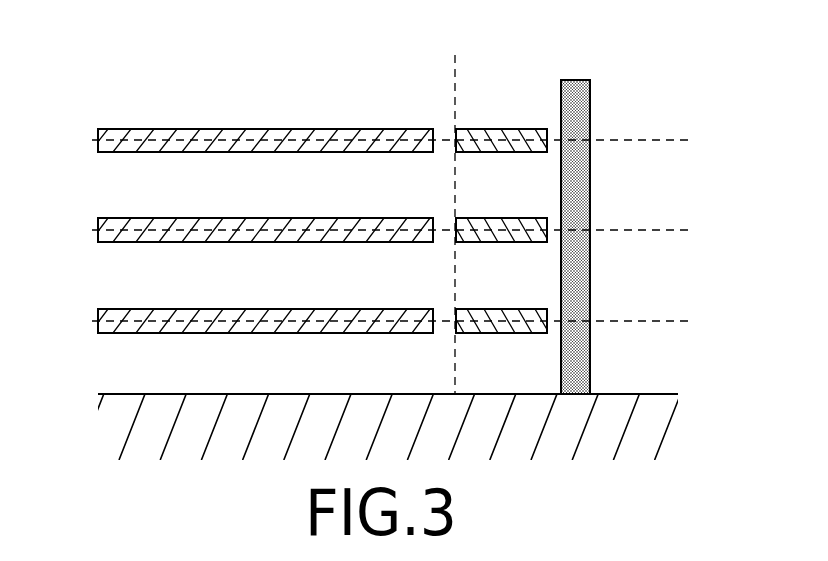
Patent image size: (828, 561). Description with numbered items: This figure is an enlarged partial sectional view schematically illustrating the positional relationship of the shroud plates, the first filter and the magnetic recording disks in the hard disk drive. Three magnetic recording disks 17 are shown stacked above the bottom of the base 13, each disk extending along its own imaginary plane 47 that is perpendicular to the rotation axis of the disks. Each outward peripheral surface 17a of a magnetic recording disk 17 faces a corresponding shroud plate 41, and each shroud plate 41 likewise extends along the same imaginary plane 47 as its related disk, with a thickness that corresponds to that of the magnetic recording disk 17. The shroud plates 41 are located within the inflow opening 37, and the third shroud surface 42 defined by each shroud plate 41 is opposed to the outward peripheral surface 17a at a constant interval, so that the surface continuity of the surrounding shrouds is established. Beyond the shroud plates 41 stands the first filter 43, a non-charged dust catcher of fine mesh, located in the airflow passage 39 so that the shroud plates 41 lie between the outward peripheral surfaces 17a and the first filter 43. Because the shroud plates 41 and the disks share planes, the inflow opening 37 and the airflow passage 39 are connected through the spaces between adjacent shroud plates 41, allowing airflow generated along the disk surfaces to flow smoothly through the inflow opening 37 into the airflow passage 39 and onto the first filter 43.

The base 13 is at (655, 392).
The magnetic recording disk 17 is at (118, 129).
The outward peripheral surface 17a is at (433, 152).
The inflow opening 37 is at (455, 72).
The airflow passage 39 is at (637, 287).
The shroud plate 41 is at (524, 128).
The third shroud surface 42 is at (455, 128).
The first filter 43 is at (590, 88).
The imaginary plane 47 is at (653, 140).